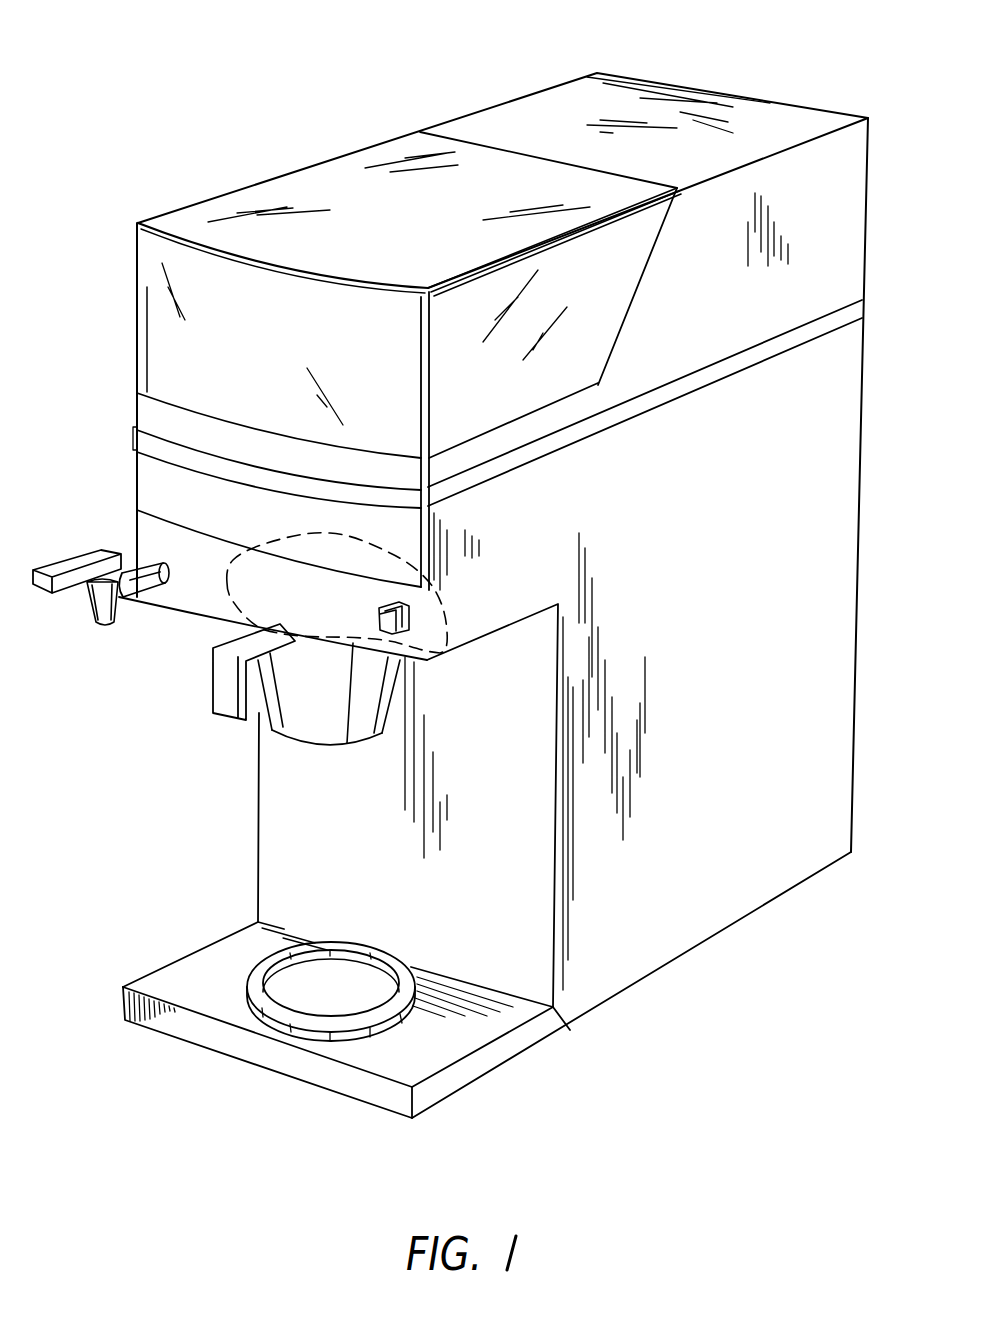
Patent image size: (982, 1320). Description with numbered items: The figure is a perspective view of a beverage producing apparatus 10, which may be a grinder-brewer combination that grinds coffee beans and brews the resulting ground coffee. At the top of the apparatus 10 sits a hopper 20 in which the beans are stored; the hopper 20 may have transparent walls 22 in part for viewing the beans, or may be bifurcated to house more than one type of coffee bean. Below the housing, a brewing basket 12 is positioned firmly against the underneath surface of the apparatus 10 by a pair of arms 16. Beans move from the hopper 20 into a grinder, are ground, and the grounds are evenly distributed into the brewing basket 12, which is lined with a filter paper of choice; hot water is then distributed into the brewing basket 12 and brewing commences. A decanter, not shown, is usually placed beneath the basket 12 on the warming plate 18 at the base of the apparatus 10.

The beverage producing apparatus 10 is at (758, 52).
The brewing basket 12 is at (267, 717).
The pair of arms 16 is at (262, 551).
The warming plate 18 is at (268, 963).
The hopper 20 is at (190, 202).
The transparent walls 22 is at (135, 348).